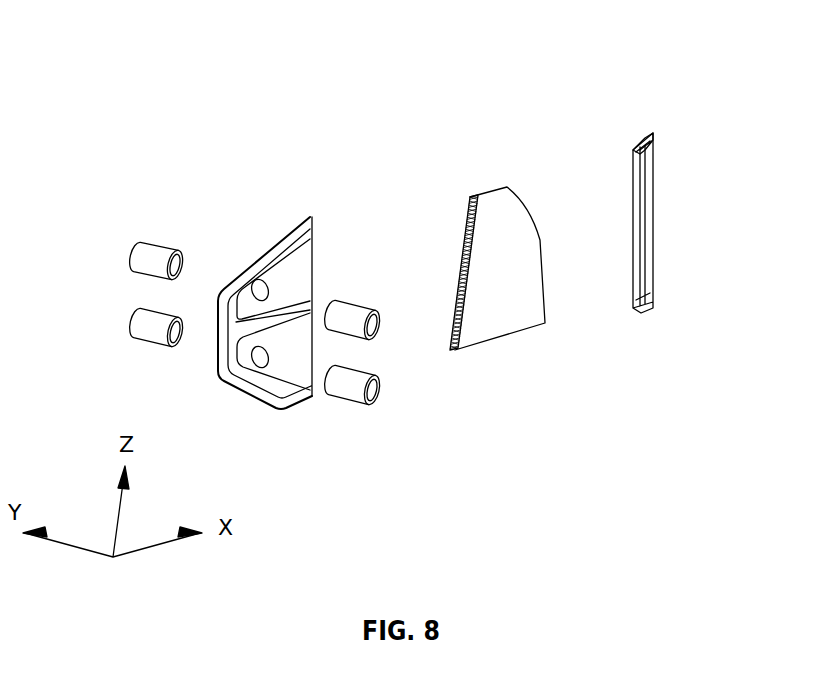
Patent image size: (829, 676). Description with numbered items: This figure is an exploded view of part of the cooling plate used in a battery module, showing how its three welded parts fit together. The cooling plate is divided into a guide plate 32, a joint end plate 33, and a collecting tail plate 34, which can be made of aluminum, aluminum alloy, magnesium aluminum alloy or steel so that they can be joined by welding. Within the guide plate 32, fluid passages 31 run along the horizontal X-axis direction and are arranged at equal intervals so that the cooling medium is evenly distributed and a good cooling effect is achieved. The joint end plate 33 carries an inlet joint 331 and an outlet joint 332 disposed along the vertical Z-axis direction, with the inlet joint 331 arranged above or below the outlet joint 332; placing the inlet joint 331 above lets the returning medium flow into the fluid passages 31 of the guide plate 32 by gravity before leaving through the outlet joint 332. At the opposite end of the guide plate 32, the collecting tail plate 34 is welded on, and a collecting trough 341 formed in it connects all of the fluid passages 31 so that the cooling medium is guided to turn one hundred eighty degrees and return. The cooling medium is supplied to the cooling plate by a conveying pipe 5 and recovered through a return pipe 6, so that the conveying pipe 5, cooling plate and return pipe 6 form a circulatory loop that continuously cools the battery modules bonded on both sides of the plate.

The conveying pipe 5 is at (148, 255).
The return pipe 6 is at (140, 328).
The fluid passage 31 is at (452, 347).
The guide plate 32 is at (476, 239).
The joint end plate 33 is at (315, 293).
The inlet joint 331 is at (315, 272).
The outlet joint 332 is at (300, 365).
The collecting tail plate 34 is at (671, 181).
The collecting trough 341 is at (633, 152).